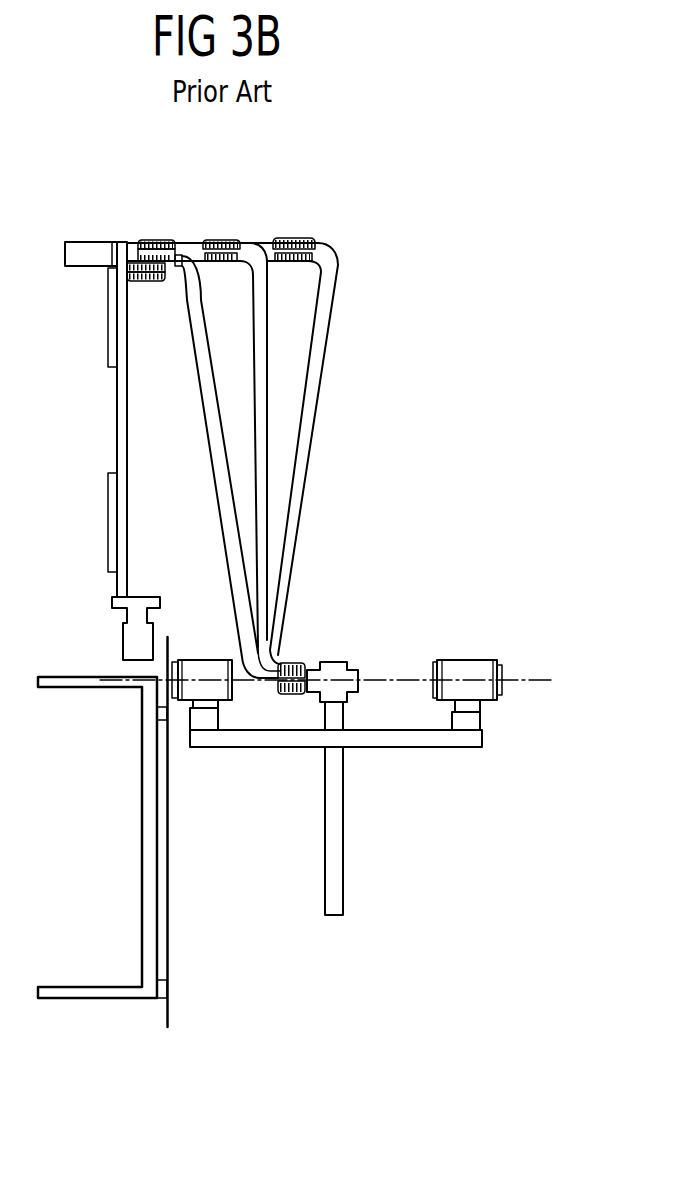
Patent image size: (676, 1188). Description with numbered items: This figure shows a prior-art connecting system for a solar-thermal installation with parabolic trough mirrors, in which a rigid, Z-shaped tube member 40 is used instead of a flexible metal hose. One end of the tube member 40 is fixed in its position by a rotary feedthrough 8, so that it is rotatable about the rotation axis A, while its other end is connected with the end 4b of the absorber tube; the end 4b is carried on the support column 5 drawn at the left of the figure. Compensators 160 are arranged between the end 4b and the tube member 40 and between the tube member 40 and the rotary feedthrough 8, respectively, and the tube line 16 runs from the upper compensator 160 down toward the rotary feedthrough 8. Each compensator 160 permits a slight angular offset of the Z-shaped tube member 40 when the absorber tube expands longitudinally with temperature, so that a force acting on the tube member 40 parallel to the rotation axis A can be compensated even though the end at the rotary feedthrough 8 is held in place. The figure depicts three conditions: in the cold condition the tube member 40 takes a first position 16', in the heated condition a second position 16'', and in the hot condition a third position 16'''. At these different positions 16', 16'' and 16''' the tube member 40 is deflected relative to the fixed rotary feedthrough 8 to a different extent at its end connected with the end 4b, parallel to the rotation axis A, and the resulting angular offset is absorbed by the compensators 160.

The end of the absorber tube 4b is at (80, 252).
The support column 5 is at (122, 443).
The rotary feedthrough 8 is at (332, 690).
The supply line 16 is at (254, 279).
The first position 16' is at (229, 421).
The second position 16'' is at (247, 398).
The third position 16''' is at (330, 409).
The Z-shaped tube member 40 is at (298, 462).
The compensator 160 is at (157, 243).
The rotation axis A is at (342, 681).